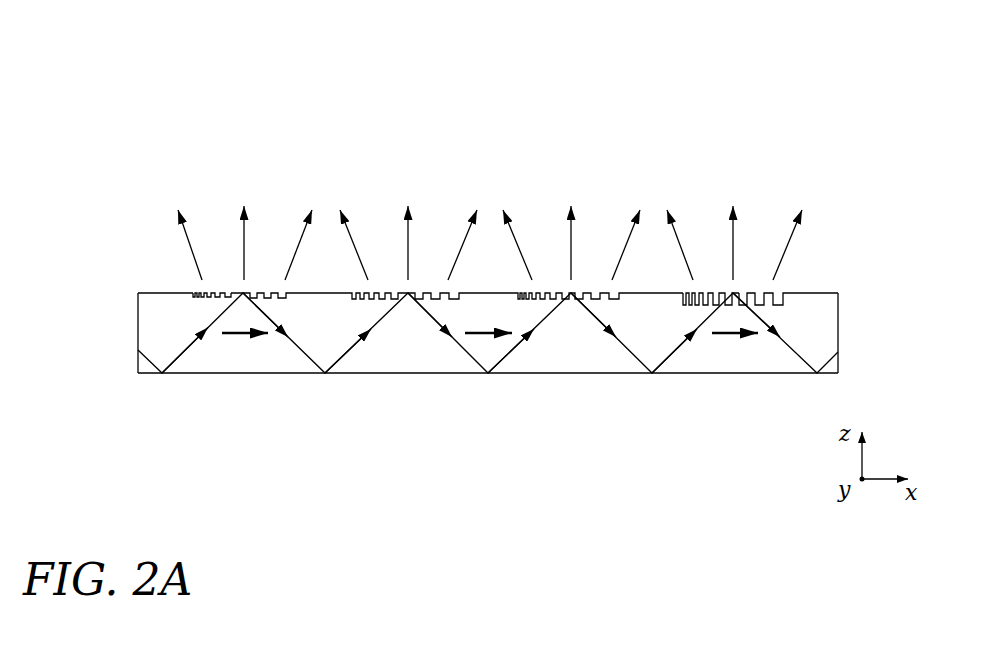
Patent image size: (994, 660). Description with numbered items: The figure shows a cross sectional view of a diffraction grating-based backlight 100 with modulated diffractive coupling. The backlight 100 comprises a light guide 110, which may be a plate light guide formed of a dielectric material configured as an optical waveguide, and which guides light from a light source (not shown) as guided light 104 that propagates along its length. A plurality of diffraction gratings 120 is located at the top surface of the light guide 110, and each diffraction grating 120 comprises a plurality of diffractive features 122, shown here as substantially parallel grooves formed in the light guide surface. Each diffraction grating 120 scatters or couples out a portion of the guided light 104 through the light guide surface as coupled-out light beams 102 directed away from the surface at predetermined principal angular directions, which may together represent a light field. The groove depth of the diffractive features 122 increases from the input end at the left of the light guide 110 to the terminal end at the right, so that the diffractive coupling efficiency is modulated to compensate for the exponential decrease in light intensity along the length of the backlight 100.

The diffraction grating-based backlight 100 is at (780, 70).
The light beams 102 is at (827, 223).
The guided light 104 is at (457, 353).
The light guide 110 is at (852, 293).
The diffraction gratings 120 is at (198, 287).
The diffractive features 122 is at (224, 287).